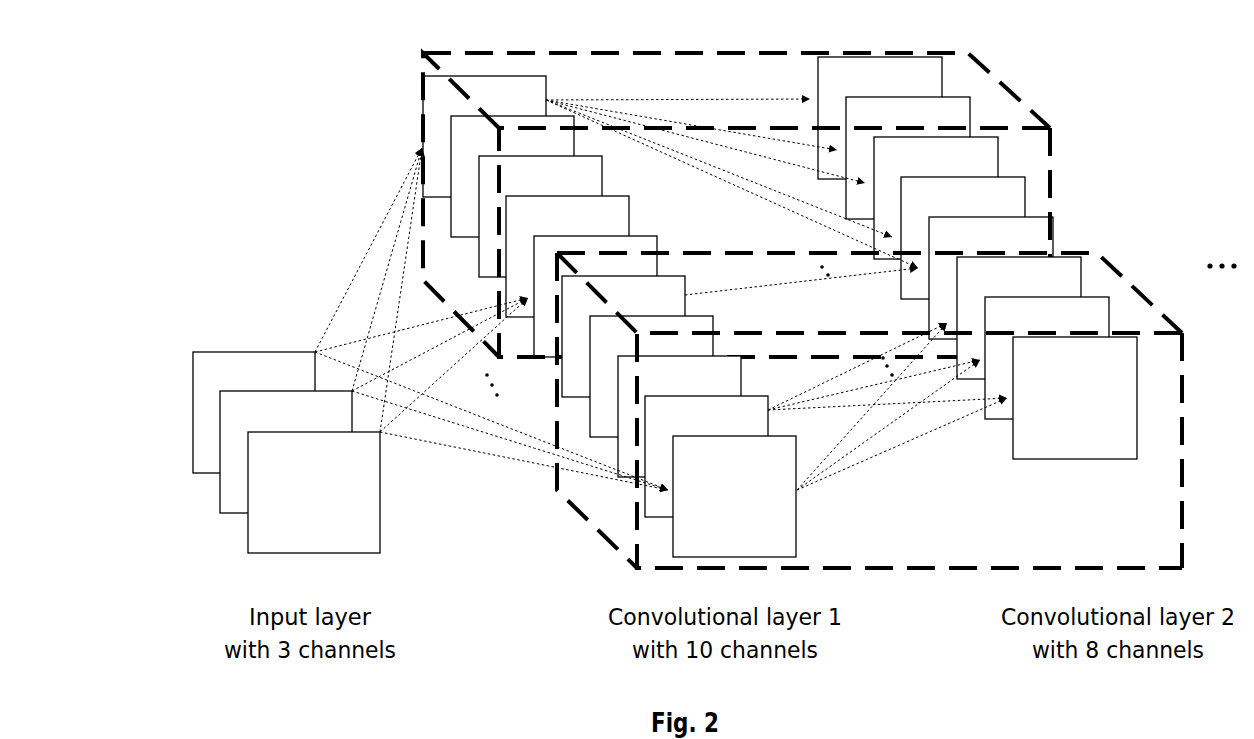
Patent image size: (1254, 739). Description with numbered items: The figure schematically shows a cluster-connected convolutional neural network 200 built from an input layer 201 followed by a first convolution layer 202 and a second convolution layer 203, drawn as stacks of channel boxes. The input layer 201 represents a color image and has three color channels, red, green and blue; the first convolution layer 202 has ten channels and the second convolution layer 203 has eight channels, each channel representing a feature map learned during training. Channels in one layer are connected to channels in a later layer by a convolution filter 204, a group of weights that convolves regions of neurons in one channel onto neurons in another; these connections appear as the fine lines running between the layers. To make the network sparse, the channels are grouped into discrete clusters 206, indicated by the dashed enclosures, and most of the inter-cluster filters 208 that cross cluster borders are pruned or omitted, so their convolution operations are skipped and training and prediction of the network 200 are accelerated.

The cluster-connected convolutional neural network 200 is at (123, 160).
The input layer 201 is at (160, 340).
The first convolution layer 202 is at (405, 50).
The second convolution layer 203 is at (800, 45).
The convolution filter 204 is at (400, 165).
The cluster 206 is at (1053, 128).
The inter-cluster filter 208 is at (783, 278).